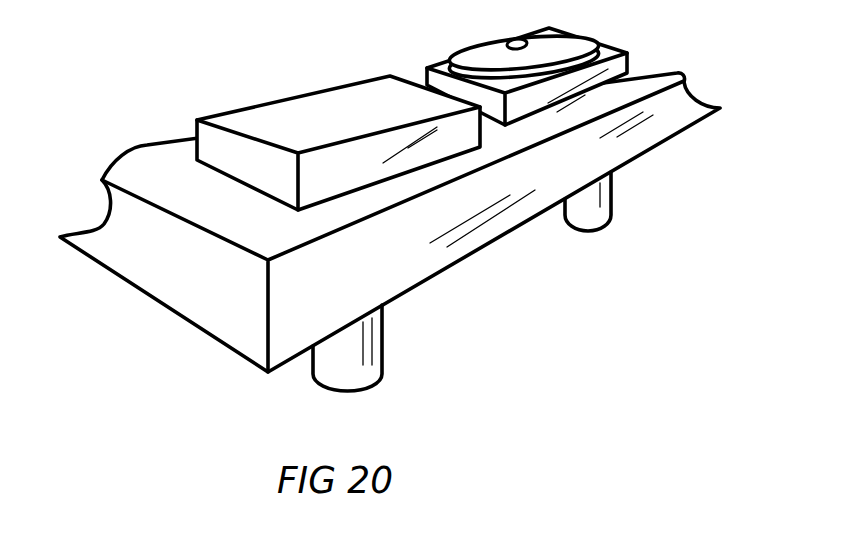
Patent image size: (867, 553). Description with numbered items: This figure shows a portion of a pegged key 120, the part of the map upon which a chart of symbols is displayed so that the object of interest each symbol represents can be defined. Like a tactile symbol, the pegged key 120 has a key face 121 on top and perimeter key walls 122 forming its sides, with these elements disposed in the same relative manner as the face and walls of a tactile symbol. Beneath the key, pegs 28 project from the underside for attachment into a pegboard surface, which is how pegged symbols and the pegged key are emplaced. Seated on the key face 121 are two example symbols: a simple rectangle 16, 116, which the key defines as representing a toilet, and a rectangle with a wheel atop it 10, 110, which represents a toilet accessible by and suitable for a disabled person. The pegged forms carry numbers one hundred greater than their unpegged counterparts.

The unpegged rectangle with a wheel atop it 10 is at (455, 66).
The pegged rectangle with wheel-like structure atop 110 is at (440, 58).
The simple unpegged rectangle 16 is at (300, 120).
The pegged simple rectangle 116 is at (355, 95).
The peg 28 is at (353, 367).
The pegged key 120 is at (403, 193).
The key face 121 is at (640, 82).
The perimeter key walls 122 is at (413, 193).